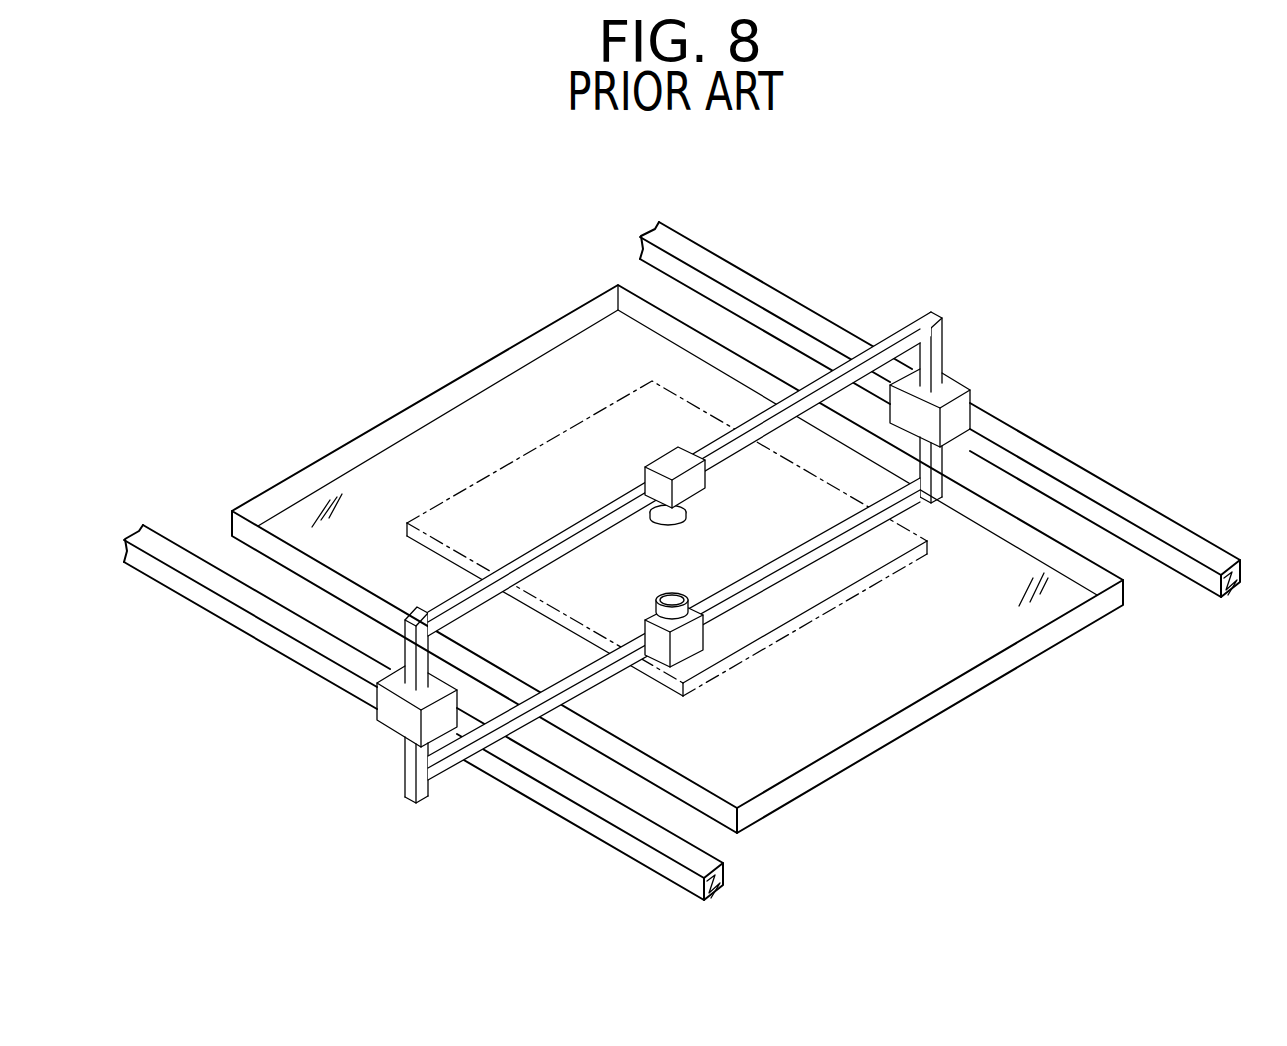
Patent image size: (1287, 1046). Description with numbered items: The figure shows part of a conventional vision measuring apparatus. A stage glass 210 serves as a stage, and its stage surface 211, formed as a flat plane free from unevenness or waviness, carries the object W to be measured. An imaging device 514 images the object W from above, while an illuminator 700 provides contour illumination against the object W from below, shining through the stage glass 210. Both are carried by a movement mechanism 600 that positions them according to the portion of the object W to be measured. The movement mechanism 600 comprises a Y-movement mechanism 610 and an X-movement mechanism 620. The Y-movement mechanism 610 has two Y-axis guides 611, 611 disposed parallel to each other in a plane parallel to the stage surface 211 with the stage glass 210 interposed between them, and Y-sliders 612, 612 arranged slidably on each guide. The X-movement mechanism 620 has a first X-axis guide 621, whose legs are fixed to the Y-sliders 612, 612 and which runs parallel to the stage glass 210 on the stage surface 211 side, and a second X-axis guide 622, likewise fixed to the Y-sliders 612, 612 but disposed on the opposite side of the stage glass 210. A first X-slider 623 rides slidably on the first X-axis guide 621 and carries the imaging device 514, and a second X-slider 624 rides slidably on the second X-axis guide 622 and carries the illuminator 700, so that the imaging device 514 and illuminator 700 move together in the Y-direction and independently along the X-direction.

The stage glass 210 is at (328, 456).
The stage surface 211 is at (289, 523).
The imaging device 514 is at (690, 515).
The movement mechanism 600 is at (1162, 417).
The Y-movement mechanism 610 is at (1150, 481).
The Y-axis guide 611 is at (1055, 453).
The Y-slider 612 is at (972, 389).
The X-movement mechanism 620 is at (864, 314).
The first X-axis guide 621 is at (922, 321).
The second X-axis guide 622 is at (938, 505).
The first X-slider 623 is at (662, 458).
The second X-slider 624 is at (680, 662).
The illuminator 700 is at (664, 603).
The object to be measured W is at (882, 568).